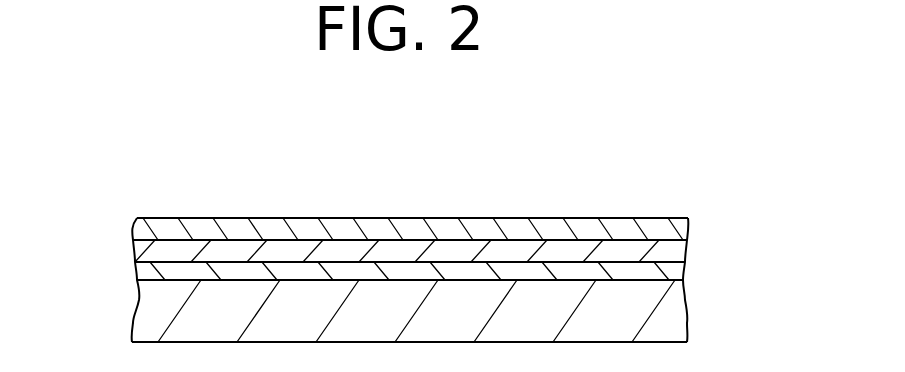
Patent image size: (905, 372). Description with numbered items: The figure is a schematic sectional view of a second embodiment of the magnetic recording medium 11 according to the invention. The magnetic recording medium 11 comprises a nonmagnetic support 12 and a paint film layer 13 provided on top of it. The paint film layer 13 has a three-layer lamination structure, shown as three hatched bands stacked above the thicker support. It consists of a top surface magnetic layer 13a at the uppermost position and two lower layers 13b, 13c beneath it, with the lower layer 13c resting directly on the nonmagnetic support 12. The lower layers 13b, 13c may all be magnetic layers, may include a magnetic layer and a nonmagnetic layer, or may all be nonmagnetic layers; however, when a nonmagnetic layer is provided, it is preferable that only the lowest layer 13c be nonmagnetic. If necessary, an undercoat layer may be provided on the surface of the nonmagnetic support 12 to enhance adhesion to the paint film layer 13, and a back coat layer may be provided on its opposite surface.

The magnetic recording medium 11 is at (408, 183).
The nonmagnetic support 12 is at (687, 320).
The paint film layer 13 is at (697, 280).
The top surface magnetic layer 13a is at (172, 222).
The lower layer 13b is at (135, 250).
The lower layer 13c is at (137, 273).